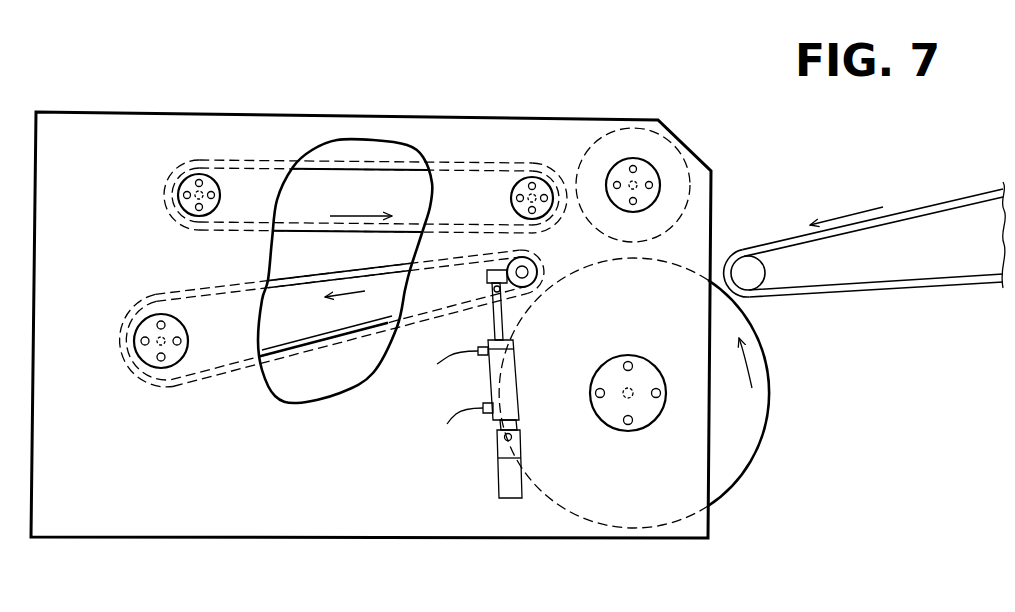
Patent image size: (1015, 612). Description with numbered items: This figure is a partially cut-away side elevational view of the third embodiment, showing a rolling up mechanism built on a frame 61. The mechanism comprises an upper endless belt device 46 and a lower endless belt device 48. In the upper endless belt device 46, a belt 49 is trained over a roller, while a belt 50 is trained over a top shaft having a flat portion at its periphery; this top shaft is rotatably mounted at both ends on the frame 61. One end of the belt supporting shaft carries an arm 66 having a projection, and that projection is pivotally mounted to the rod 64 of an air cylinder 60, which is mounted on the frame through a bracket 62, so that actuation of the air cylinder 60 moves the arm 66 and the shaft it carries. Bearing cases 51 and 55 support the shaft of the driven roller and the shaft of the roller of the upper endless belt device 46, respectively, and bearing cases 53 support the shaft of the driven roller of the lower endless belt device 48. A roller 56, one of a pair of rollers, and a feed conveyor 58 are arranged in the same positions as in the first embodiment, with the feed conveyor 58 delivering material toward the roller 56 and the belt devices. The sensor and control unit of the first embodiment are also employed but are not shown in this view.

The upper endless belt device 46 is at (352, 150).
The lower endless belt device 48 is at (321, 353).
The belt 49 is at (290, 233).
The belt 50 is at (366, 333).
The bearing case 51 is at (189, 209).
The bearing cases 53 is at (147, 352).
The bearing case 55 is at (541, 187).
The roller 56 is at (775, 412).
The feed conveyor 58 is at (924, 196).
The air cylinder 60 is at (486, 383).
The frame 61 is at (510, 119).
The bracket 62 is at (496, 466).
The rod 64 is at (490, 325).
The arm 66 is at (531, 262).